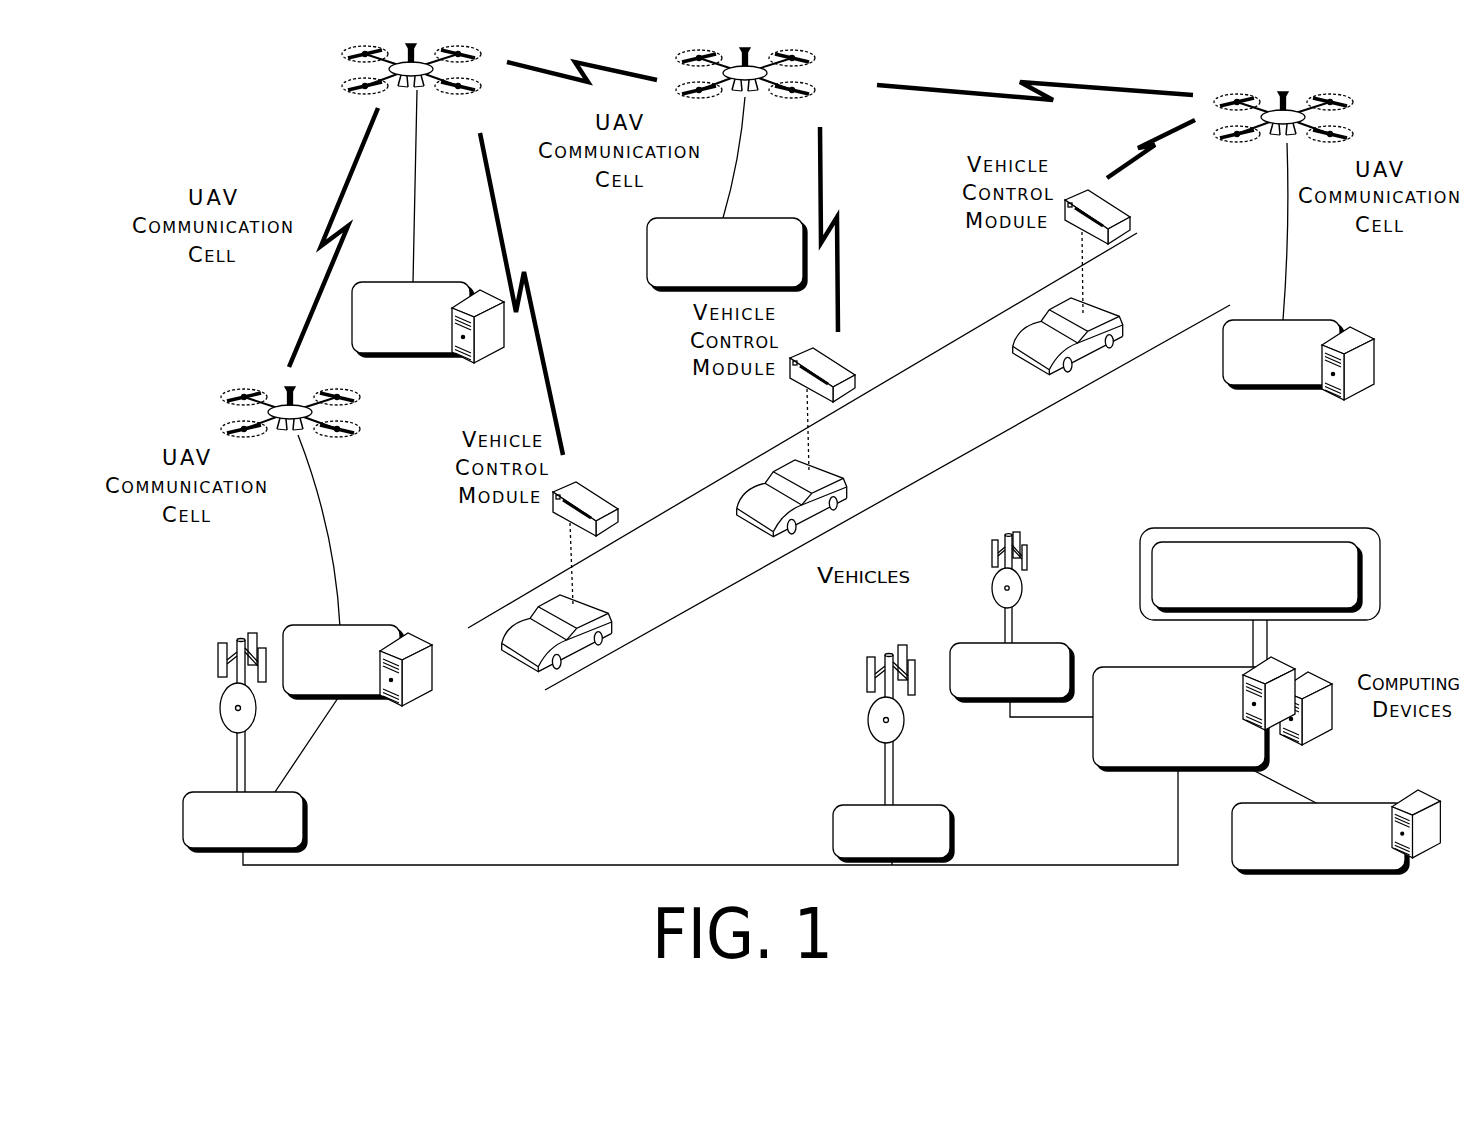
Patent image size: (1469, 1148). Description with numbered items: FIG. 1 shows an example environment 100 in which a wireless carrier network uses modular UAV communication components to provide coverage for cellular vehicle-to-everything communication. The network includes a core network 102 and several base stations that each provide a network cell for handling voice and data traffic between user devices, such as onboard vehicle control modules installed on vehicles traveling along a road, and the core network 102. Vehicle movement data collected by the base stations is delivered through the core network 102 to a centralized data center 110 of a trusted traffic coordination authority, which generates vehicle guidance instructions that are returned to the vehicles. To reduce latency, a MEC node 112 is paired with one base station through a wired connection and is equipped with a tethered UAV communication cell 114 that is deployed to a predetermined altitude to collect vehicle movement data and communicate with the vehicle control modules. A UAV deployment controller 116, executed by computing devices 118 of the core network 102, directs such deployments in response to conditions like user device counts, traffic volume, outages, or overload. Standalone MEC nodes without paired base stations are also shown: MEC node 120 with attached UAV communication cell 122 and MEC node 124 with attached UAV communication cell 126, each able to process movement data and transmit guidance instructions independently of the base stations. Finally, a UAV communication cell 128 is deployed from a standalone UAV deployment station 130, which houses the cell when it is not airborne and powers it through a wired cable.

The environment 100 is at (170, 102).
The core network 102 is at (1198, 757).
The centralized data center 110 is at (1340, 864).
The MEC node 112 is at (360, 684).
The UAV communication cell 114 is at (250, 395).
The UAV deployment controller 116 is at (1343, 601).
The computing devices 118 is at (1294, 660).
The MEC node 120 is at (432, 342).
The UAV communication cell 122 is at (347, 90).
The MEC node 124 is at (1300, 381).
The UAV communication cell 126 is at (1323, 92).
The UAV communication cell 128 is at (803, 92).
The standalone UAV deployment station 130 is at (788, 277).